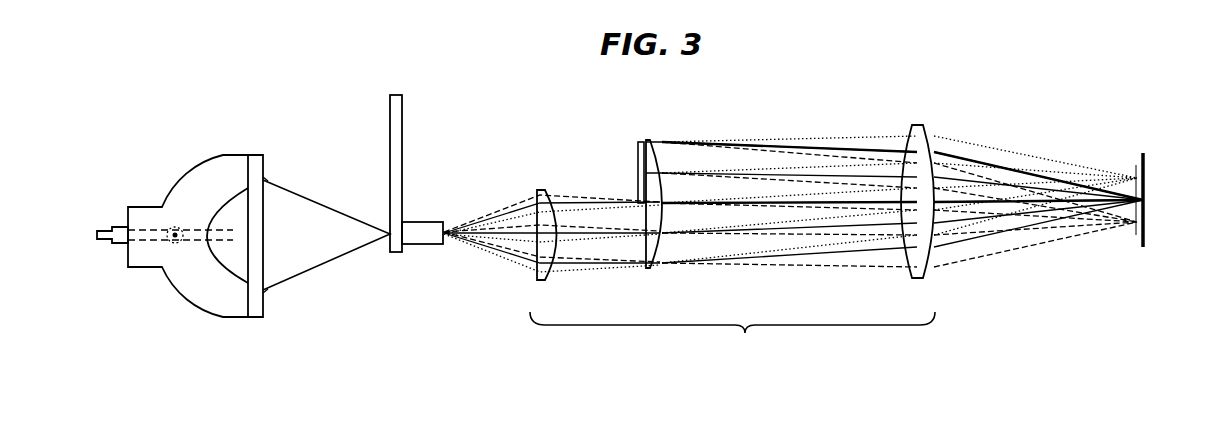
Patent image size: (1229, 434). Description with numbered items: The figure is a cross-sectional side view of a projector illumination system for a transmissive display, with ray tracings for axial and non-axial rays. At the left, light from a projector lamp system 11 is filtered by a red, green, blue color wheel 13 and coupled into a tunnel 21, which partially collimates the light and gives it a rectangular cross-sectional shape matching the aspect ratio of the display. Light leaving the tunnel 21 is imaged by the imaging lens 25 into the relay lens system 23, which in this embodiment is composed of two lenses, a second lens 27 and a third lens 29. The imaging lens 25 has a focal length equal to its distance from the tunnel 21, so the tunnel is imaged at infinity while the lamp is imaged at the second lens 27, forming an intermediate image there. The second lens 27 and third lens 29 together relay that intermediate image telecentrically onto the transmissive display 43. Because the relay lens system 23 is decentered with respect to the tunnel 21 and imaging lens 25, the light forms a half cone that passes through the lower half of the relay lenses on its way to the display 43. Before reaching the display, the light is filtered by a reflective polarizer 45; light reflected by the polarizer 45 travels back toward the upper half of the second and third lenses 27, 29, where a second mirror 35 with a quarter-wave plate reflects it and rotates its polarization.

The projector lamp system 11 is at (193, 297).
The color wheel 13 is at (388, 112).
The tunnel 21 is at (425, 222).
The relay lens system 23 is at (732, 340).
The imaging lens 25 is at (538, 280).
The second lens 27 is at (648, 268).
The third lens 29 is at (916, 279).
The second mirror 35 is at (638, 163).
The transmissive display 43 is at (1145, 232).
The reflective polarizer 45 is at (1136, 230).